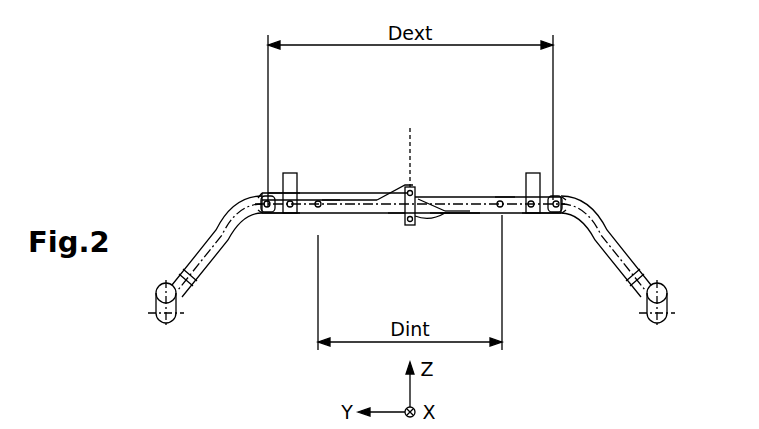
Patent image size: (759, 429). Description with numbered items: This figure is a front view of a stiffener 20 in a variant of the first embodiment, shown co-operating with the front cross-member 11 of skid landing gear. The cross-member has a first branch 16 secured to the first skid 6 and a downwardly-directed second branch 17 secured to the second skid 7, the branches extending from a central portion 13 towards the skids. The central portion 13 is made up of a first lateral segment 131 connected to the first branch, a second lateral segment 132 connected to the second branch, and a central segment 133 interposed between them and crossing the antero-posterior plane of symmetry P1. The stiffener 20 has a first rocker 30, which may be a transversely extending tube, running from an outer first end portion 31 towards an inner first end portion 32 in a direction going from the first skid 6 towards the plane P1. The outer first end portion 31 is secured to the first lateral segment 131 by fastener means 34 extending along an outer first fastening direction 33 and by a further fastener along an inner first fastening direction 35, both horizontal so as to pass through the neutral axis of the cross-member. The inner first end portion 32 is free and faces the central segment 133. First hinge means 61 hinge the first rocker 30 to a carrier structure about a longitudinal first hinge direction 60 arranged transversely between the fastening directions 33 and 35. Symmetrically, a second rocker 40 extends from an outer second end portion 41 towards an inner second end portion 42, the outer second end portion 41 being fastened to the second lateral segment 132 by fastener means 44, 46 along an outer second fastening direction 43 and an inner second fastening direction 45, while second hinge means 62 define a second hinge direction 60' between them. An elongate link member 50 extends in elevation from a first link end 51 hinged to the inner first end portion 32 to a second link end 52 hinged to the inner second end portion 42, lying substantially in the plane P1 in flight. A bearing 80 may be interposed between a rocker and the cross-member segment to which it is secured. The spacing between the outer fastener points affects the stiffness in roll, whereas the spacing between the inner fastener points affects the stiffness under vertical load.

The first skid 6 is at (668, 313).
The second skid 7 is at (168, 322).
The front cross-member 11 is at (589, 182).
The central portion 13 is at (498, 124).
The first branch 16 is at (618, 218).
The second branch 17 is at (220, 232).
The stiffener 20 is at (457, 246).
The first rocker 30 is at (494, 237).
The outer first end portion 31 is at (554, 215).
The inner first end portion 32 is at (440, 215).
The outer first fastening direction 33 is at (598, 170).
The fastener means 34 is at (558, 200).
The inner first fastening direction 35 is at (443, 203).
The second rocker 40 is at (313, 232).
The outer second end portion 41 is at (278, 193).
The inner second end portion 42 is at (393, 191).
The outer second fastening direction 43 is at (220, 175).
The fastener means 44 is at (262, 200).
The inner second fastening direction 45 is at (357, 161).
The fastener means 46 is at (330, 193).
The elongate link member 50 is at (418, 197).
The first link end 51 is at (408, 226).
The second link end 52 is at (413, 190).
The first hinge direction 60 is at (551, 245).
The first hinge means 61 is at (531, 214).
The second hinge direction 60' is at (270, 289).
The second hinge means 62 is at (275, 217).
The bearing 80 is at (262, 216).
The first lateral segment 131 is at (506, 194).
The second lateral segment 132 is at (287, 232).
The central segment 133 is at (398, 232).
The antero-posterior plane of symmetry P1 is at (409, 128).